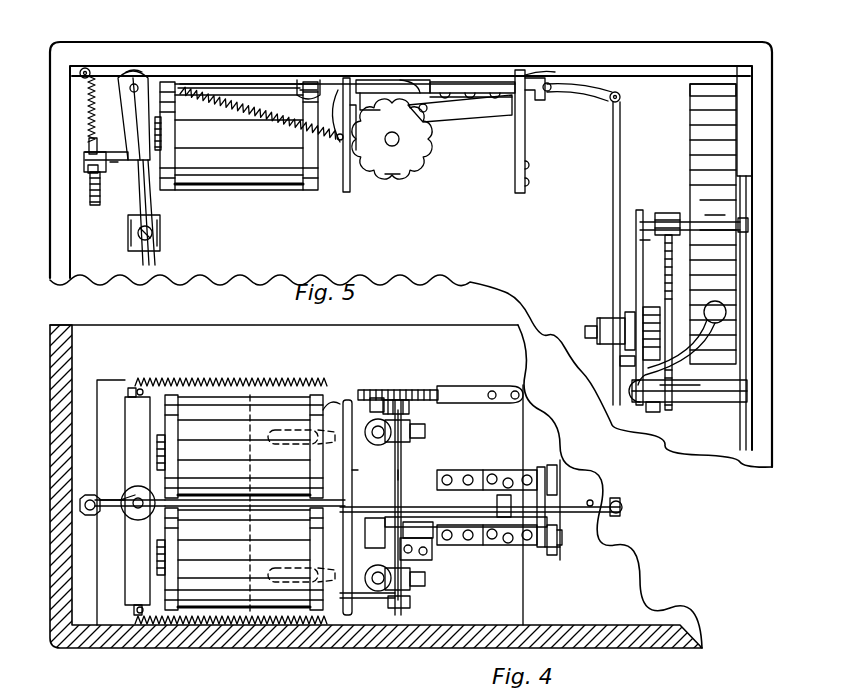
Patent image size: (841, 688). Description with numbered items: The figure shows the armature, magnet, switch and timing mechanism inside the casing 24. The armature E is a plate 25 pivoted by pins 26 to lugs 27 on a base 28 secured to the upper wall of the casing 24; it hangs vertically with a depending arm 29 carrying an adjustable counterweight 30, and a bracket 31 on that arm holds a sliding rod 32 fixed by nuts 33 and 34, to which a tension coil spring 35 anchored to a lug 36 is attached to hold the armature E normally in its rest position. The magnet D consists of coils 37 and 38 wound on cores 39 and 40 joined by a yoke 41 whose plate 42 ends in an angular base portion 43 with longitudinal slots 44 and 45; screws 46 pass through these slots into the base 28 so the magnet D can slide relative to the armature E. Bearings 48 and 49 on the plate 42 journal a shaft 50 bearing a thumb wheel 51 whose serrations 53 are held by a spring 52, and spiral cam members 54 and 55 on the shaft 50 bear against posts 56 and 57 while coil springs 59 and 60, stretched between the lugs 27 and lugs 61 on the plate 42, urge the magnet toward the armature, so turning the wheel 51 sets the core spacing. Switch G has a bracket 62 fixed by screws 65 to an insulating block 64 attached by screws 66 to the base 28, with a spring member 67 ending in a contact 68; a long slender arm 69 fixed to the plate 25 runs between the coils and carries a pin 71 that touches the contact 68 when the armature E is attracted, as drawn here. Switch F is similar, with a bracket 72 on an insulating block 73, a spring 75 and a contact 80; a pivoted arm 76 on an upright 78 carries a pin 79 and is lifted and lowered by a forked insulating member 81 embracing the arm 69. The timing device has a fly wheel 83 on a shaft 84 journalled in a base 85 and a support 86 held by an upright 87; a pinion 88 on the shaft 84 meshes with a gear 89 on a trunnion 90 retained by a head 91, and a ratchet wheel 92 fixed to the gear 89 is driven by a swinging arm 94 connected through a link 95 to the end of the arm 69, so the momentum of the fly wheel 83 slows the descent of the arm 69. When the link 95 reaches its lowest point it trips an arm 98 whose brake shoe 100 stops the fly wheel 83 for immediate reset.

In FIG. 5, the casing 24 is at (640, 52).
In FIG. 4, the casing 24 is at (665, 640).
In FIG. 5, the plate 25 is at (90, 148).
In FIG. 5, the pins 26 is at (133, 83).
In FIG. 4, the pins 26 is at (136, 388).
In FIG. 5, the lugs 27 is at (146, 78).
In FIG. 4, the lugs 27 is at (130, 390).
In FIG. 5, the base 28 is at (225, 74).
In FIG. 4, the base 28 is at (490, 410).
In FIG. 5, the depending arm 29 is at (150, 208).
In FIG. 4, the depending arm 29 is at (140, 504).
In FIG. 5, the counterweight 30 is at (162, 243).
In FIG. 4, the counterweight 30 is at (130, 506).
In FIG. 5, the bracket 31 is at (114, 164).
In FIG. 4, the bracket 31 is at (125, 512).
In FIG. 5, the sliding rod 32 is at (92, 195).
In FIG. 4, the sliding rod 32 is at (84, 500).
In FIG. 5, the nut 33 is at (84, 162).
In FIG. 5, the nut 34 is at (88, 170).
In FIG. 4, the nut 34 is at (84, 508).
In FIG. 5, the tension coil spring 35 is at (85, 100).
In FIG. 5, the lug 36 is at (88, 68).
In FIG. 5, the coil 37 is at (240, 170).
In FIG. 4, the coil 37 is at (262, 405).
In FIG. 4, the coil 38 is at (210, 612).
In FIG. 5, the core 39 is at (163, 135).
In FIG. 4, the core 39 is at (157, 450).
In FIG. 4, the core 40 is at (157, 560).
In FIG. 5, the yoke 41 is at (346, 192).
In FIG. 4, the yoke 41 is at (345, 496).
In FIG. 5, the plate 42 is at (352, 180).
In FIG. 4, the plate 42 is at (350, 478).
In FIG. 5, the angular base portion 43 is at (322, 78).
In FIG. 4, the longitudinal slot 44 is at (268, 440).
In FIG. 4, the longitudinal slot 45 is at (282, 568).
In FIG. 5, the screws 46 is at (310, 80).
In FIG. 4, the screws 46 is at (320, 404).
In FIG. 5, the bearing 48 is at (362, 162).
In FIG. 4, the bearing 48 is at (410, 405).
In FIG. 4, the bearing 49 is at (399, 608).
In FIG. 5, the shaft 50 is at (395, 145).
In FIG. 4, the shaft 50 is at (402, 460).
In FIG. 5, the thumb wheel 51 is at (398, 165).
In FIG. 4, the thumb wheel 51 is at (400, 400).
In FIG. 4, the spring 52 is at (462, 386).
In FIG. 5, the serrations 53 is at (430, 152).
In FIG. 4, the spiral cam member 54 is at (382, 440).
In FIG. 4, the spiral cam member 55 is at (418, 586).
In FIG. 4, the post 56 is at (380, 400).
In FIG. 4, the post 57 is at (378, 592).
In FIG. 5, the coil spring 59 is at (194, 88).
In FIG. 4, the coil spring 59 is at (237, 380).
In FIG. 4, the coil spring 60 is at (280, 626).
In FIG. 5, the lugs 61 is at (352, 78).
In FIG. 4, the lugs 61 is at (358, 392).
In FIG. 5, the bracket 62 is at (522, 122).
In FIG. 4, the bracket 62 is at (541, 467).
In FIG. 5, the insulating block 64 is at (487, 80).
In FIG. 4, the insulating block 64 is at (480, 470).
In FIG. 4, the screws 65 is at (510, 475).
In FIG. 4, the screws 66 is at (455, 482).
In FIG. 5, the spring member 67 is at (546, 98).
In FIG. 5, the contact 68 is at (540, 70).
In FIG. 5, the arm 69 is at (386, 95).
In FIG. 4, the arm 69 is at (590, 503).
In FIG. 5, the pin 71 is at (550, 92).
In FIG. 4, the pin 71 is at (550, 480).
In FIG. 4, the bracket 72 is at (520, 537).
In FIG. 4, the insulating block 73 is at (455, 548).
In FIG. 4, the spring 75 is at (548, 556).
In FIG. 5, the pivoted arm 76 is at (462, 110).
In FIG. 4, the pivoted arm 76 is at (390, 520).
In FIG. 5, the upright 78 is at (422, 82).
In FIG. 4, the upright 78 is at (430, 550).
In FIG. 4, the pin 79 is at (560, 537).
In FIG. 4, the contact 80 is at (552, 549).
In FIG. 5, the forked insulating member 81 is at (530, 145).
In FIG. 4, the forked insulating member 81 is at (548, 512).
In FIG. 5, the fly wheel 83 is at (717, 92).
In FIG. 5, the shaft 84 is at (640, 212).
In FIG. 5, the base 85 is at (748, 176).
In FIG. 5, the support 86 is at (640, 240).
In FIG. 5, the upright 87 is at (640, 400).
In FIG. 5, the pinion 88 is at (667, 213).
In FIG. 5, the gear 89 is at (662, 402).
In FIG. 5, the trunnion 90 is at (590, 328).
In FIG. 5, the head 91 is at (672, 300).
In FIG. 5, the ratchet wheel 92 is at (655, 412).
In FIG. 5, the swinging arm 94 is at (612, 330).
In FIG. 5, the link 95 is at (612, 187).
In FIG. 4, the link 95 is at (625, 507).
In FIG. 5, the arm 98 is at (670, 360).
In FIG. 5, the brake shoe 100 is at (722, 325).
In FIG. 5, the magnet D is at (278, 170).
In FIG. 5, the armature E is at (128, 115).
In FIG. 4, the armature E is at (133, 412).